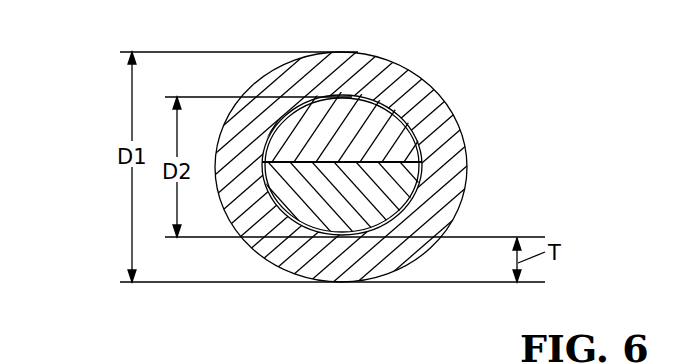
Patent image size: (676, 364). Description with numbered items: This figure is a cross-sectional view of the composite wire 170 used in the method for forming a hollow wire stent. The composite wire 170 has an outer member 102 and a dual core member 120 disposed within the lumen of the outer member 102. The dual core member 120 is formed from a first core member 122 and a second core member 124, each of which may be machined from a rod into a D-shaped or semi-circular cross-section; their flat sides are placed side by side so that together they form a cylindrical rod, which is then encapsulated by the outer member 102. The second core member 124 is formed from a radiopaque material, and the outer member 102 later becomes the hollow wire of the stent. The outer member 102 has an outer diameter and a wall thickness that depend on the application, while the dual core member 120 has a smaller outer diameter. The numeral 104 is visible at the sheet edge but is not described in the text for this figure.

The outer member 102 is at (407, 80).
The dual core member 120 is at (396, 142).
The first core member 122 is at (378, 97).
The second core member 124 is at (420, 186).
The composite wire 170 is at (543, 48).
The fiber 104 is at (358, 359).